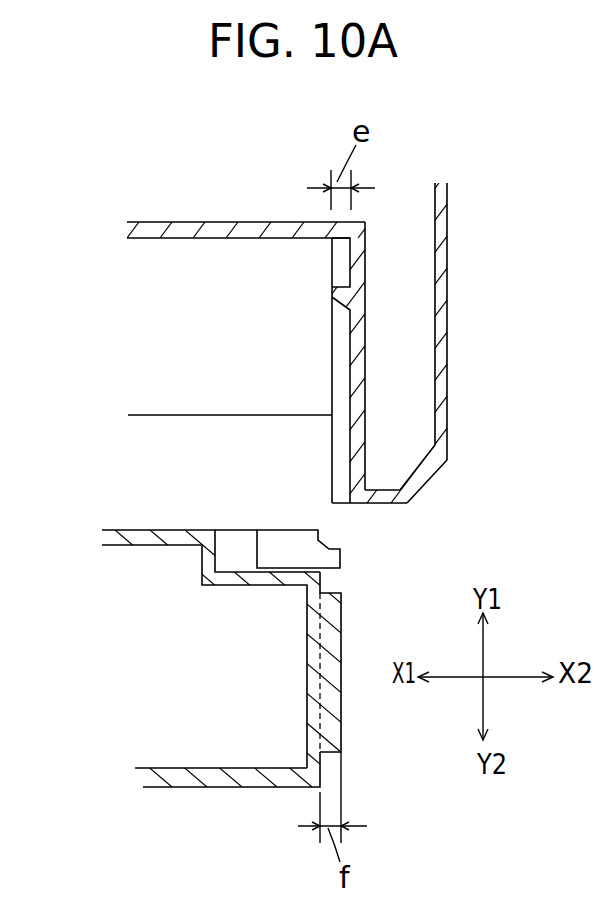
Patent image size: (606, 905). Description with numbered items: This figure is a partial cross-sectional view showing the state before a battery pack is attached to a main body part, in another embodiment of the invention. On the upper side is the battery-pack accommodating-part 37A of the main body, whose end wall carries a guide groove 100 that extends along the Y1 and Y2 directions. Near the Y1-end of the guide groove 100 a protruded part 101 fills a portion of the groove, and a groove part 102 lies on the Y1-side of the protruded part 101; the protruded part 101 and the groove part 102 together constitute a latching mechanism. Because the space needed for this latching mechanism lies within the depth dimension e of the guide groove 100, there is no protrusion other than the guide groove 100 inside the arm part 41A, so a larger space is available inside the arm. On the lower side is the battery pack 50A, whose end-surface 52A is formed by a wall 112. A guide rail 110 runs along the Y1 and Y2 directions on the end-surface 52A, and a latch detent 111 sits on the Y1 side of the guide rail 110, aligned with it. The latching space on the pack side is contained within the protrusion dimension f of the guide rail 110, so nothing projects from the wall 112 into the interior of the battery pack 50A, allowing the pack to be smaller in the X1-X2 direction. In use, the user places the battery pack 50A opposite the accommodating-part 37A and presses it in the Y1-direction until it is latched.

The battery-pack accommodating-part 37A is at (178, 339).
The groove part 102 is at (332, 260).
The protruded part 101 is at (333, 293).
The guide groove 100 is at (345, 390).
The arm part 41A is at (445, 391).
The latch detent 111 is at (327, 554).
The wall 112 is at (307, 688).
The guide rail 110 is at (343, 722).
The end-surface 52A is at (341, 770).
The battery pack 50A is at (209, 792).